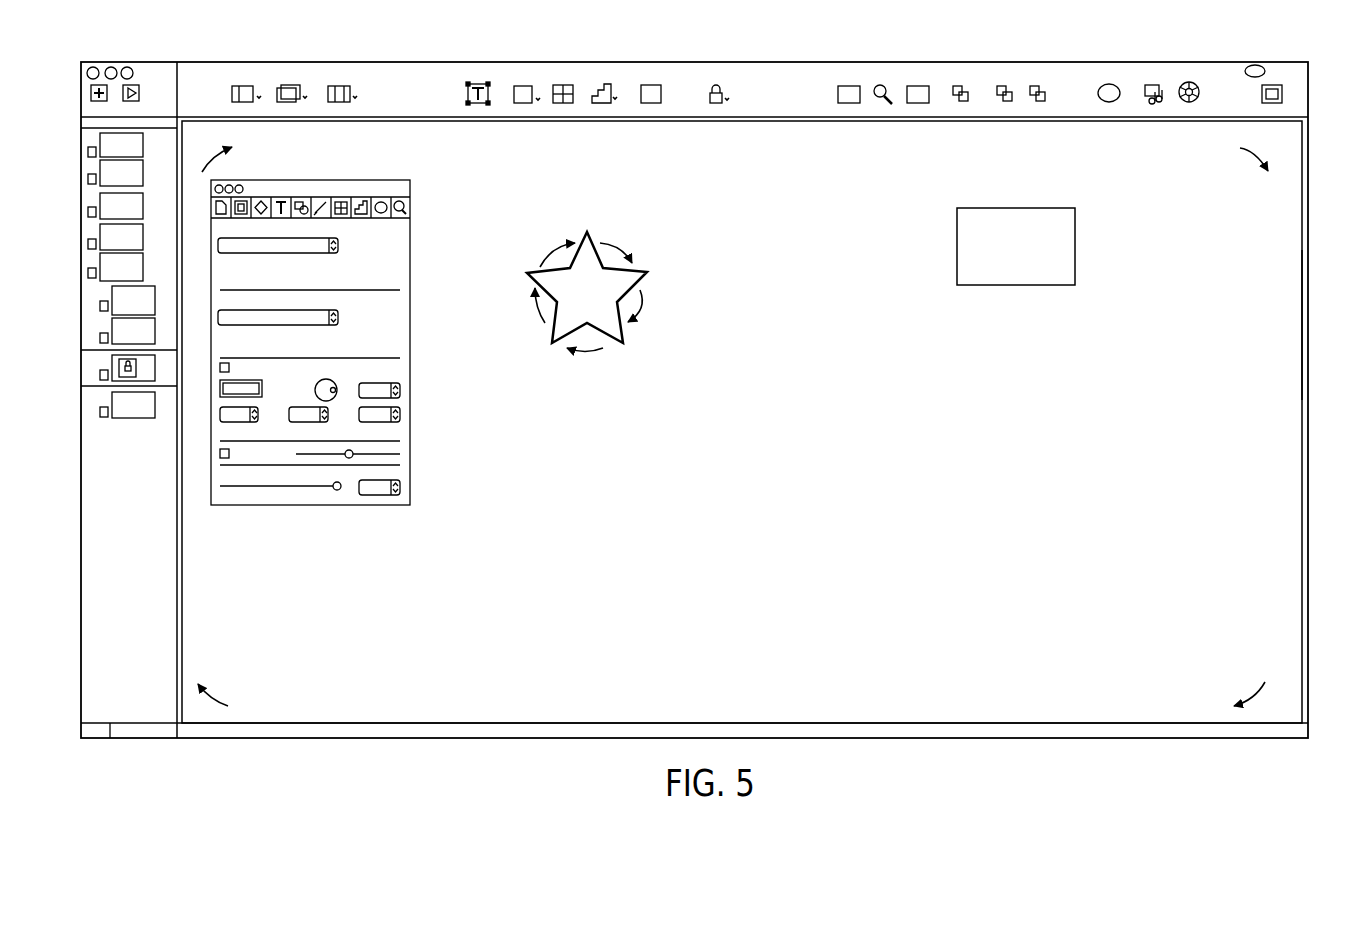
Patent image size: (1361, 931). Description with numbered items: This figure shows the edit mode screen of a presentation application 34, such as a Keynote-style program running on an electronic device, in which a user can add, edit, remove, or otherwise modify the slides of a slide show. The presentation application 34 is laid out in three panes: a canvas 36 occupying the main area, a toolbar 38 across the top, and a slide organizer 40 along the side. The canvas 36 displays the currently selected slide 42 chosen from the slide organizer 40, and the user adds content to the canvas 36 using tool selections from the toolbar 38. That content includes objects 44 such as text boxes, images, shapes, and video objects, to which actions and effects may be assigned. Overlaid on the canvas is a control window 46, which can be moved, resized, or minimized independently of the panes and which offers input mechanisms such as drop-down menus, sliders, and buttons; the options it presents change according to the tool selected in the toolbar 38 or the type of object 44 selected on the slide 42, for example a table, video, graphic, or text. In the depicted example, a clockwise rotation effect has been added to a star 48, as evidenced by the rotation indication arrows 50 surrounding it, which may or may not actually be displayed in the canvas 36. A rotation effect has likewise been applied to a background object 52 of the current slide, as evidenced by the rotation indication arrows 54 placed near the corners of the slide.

The presentation application 34 is at (424, 45).
The canvas 36 is at (314, 621).
The toolbar 38 is at (420, 104).
The slide organizer 40 is at (146, 691).
The slide 42 is at (128, 148).
The object 44 is at (1025, 208).
The control window 46 is at (392, 178).
The star 48 is at (588, 230).
The rotation indication arrows 50 is at (552, 253).
The background object 52 is at (1260, 355).
The rotation indication arrows 54 is at (226, 150).